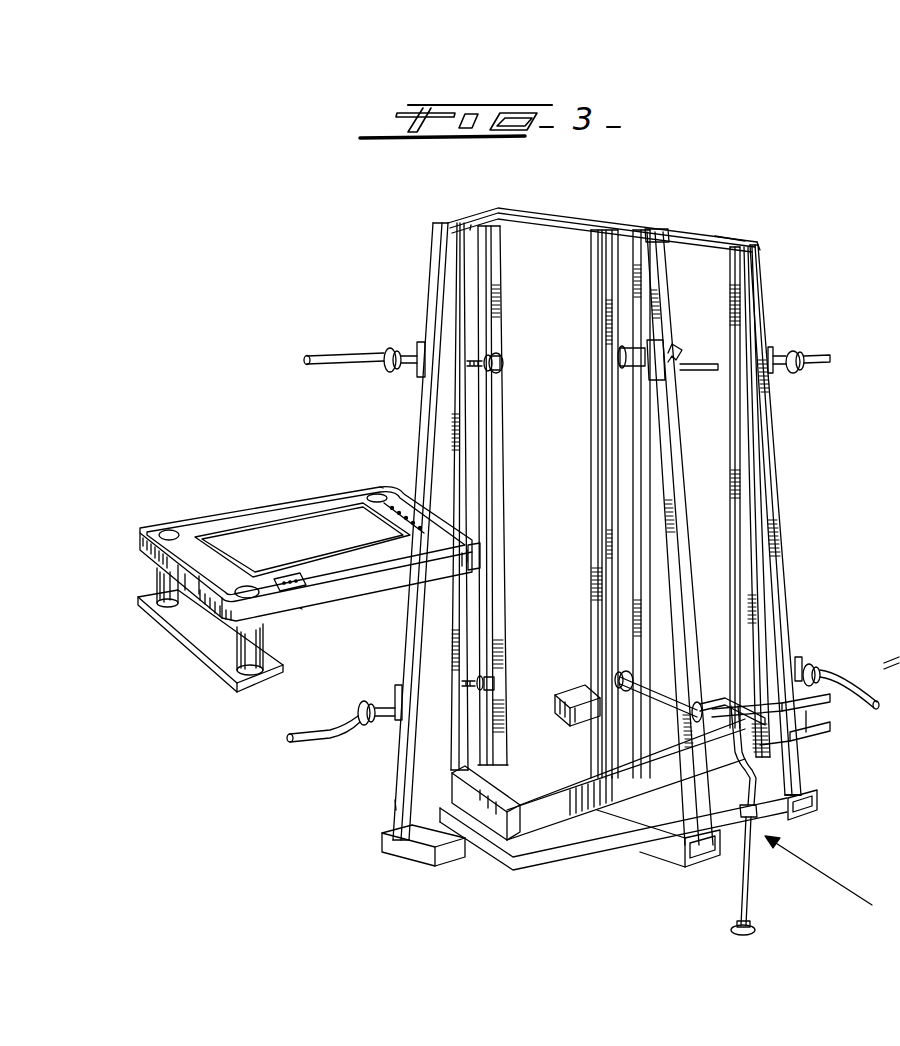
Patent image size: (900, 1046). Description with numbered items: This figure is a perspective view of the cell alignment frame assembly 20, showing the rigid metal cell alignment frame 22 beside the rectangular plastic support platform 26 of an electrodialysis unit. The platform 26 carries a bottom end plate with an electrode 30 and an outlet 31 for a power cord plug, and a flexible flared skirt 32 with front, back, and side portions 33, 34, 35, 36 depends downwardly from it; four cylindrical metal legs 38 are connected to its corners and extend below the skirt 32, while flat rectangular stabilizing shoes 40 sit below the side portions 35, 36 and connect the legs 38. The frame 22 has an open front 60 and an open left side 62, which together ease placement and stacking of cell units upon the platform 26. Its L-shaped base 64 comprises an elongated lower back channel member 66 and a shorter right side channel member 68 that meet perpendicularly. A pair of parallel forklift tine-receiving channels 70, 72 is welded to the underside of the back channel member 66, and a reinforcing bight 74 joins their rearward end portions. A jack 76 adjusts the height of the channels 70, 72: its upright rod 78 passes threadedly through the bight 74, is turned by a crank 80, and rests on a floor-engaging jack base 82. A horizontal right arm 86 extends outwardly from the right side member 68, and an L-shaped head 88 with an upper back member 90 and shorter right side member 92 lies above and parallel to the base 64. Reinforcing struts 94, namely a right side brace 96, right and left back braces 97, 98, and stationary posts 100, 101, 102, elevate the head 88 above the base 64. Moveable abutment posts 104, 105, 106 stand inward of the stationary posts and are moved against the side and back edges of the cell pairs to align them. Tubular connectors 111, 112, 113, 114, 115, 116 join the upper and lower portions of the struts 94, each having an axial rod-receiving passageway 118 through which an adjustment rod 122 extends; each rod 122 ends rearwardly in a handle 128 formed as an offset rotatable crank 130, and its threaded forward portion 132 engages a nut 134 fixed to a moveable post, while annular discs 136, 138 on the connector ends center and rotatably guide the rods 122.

The cell alignment frame assembly 20 is at (766, 239).
The cell alignment frame 22 is at (446, 223).
The support platform 26 is at (296, 506).
The electrode 30 is at (250, 529).
The outlet 31 is at (288, 578).
The flared skirt 32 is at (141, 547).
The front skirt portion 33 is at (338, 490).
The back skirt portion 34 is at (362, 598).
The side skirt portion 35 is at (393, 490).
The right side skirt portion 36 is at (207, 602).
The legs 38 is at (266, 649).
The stabilizing shoes 40 is at (220, 660).
The open front 60 is at (554, 596).
The open left side 62 is at (784, 623).
The L-shaped base 64 is at (510, 824).
The back channel member 66 is at (830, 720).
The right side channel member 68 is at (493, 832).
The forklift tine-receiving channel 70 is at (818, 802).
The forklift tine-receiving channel 72 is at (690, 866).
The bight 74 is at (780, 838).
The jack 76 is at (748, 889).
The upright rod 78 is at (757, 787).
The crank 80 is at (755, 760).
The jack base 82 is at (756, 930).
The right arm 86 is at (395, 855).
The L-shaped head 88 is at (498, 209).
The upper back member 90 is at (724, 241).
The upper right side member 92 is at (470, 230).
The reinforcing struts 94 is at (435, 254).
The right side brace 96 is at (412, 818).
The right back brace 97 is at (672, 826).
The left back brace 98 is at (777, 426).
The stationary right side post 100 is at (455, 759).
The stationary right back post 101 is at (632, 428).
The stationary left back post 102 is at (750, 494).
The moveable right side post 104 is at (503, 296).
The moveable right back post 105 is at (588, 517).
The moveable left back post 106 is at (733, 266).
The upper right side tubular connector 111 is at (401, 354).
The lower right side tubular connector 112 is at (378, 722).
The upper right back tubular connector 113 is at (668, 354).
The lower right back tubular connector 114 is at (622, 677).
The upper left back tubular connector 115 is at (786, 359).
The lower left back tubular connector 116 is at (800, 670).
The rod-receiving passageway 118 is at (358, 710).
The adjustment rods 122 is at (480, 364).
The handle 128 is at (345, 369).
The rotatable crank 130 is at (860, 697).
The threaded forward portion 132 is at (478, 684).
The nut 134 is at (498, 375).
The annular disc 136 is at (820, 672).
The annular disc 138 is at (606, 360).